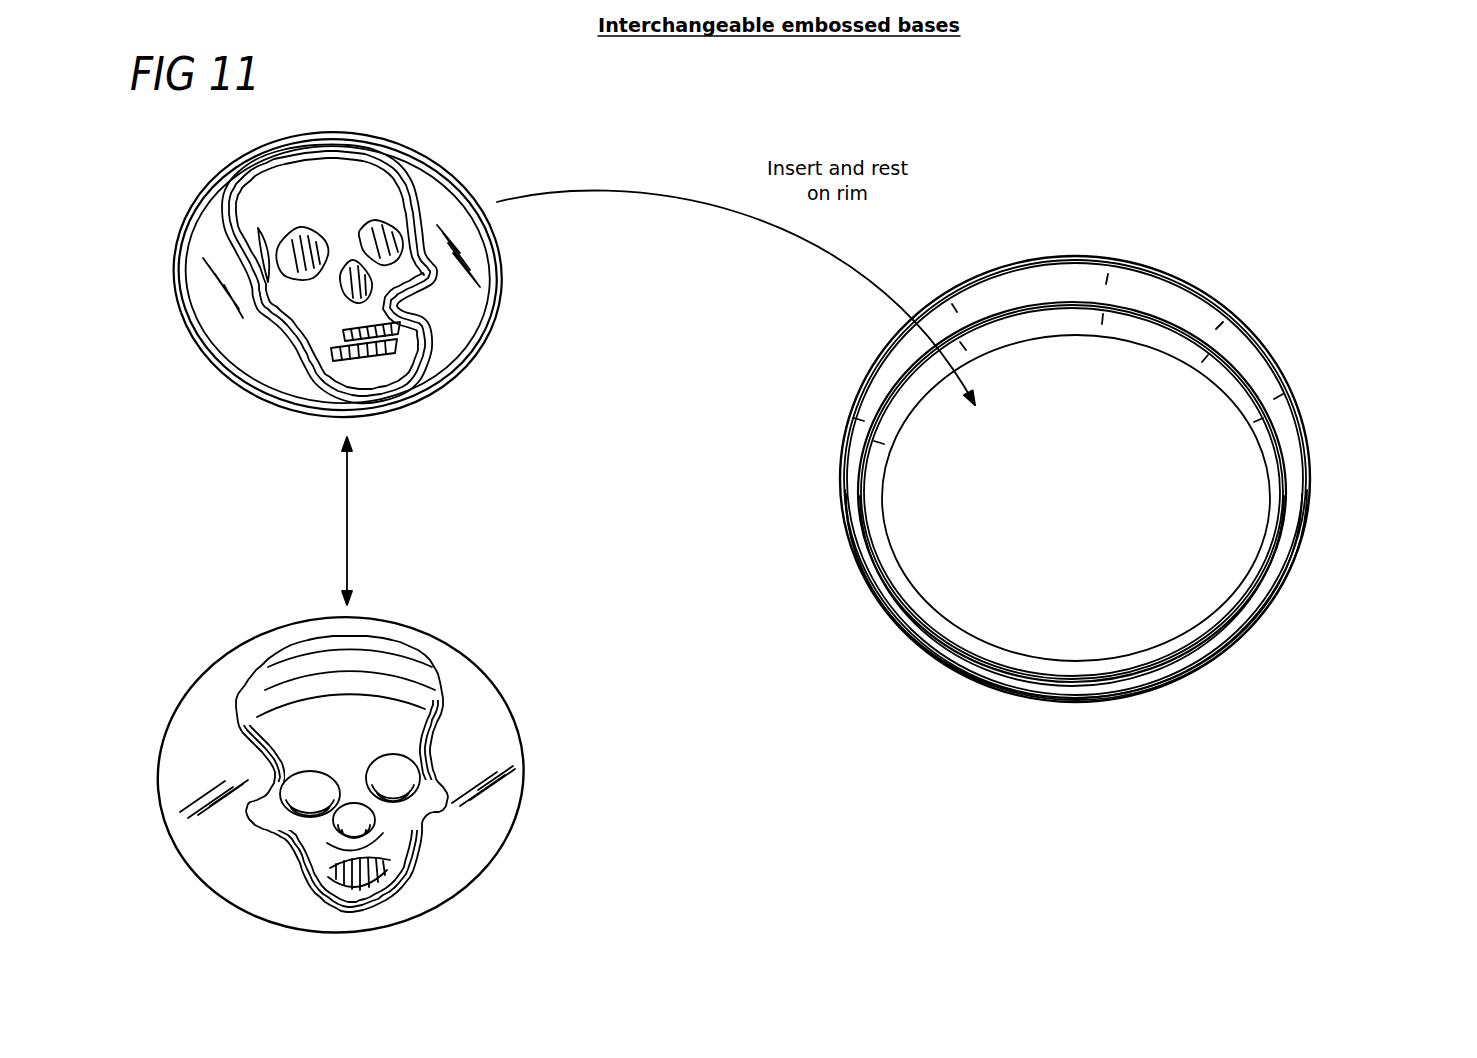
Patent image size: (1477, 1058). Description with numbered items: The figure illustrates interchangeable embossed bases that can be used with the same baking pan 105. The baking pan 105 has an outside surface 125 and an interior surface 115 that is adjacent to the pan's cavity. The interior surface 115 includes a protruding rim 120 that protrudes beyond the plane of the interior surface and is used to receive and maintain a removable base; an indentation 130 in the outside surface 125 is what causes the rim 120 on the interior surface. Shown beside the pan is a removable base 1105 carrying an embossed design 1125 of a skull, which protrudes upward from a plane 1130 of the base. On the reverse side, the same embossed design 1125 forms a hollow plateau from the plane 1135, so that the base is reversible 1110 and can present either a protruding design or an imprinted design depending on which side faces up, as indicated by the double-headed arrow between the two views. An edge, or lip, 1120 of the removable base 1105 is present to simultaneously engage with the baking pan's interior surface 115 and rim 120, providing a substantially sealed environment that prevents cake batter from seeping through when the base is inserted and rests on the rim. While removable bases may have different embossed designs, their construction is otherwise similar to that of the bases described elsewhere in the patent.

The baking pan 105 is at (1260, 268).
The interior surface 115 is at (907, 342).
The protruding rim 120 is at (1013, 307).
The outside surface 125 is at (982, 675).
The indentation 130 is at (1195, 663).
The removable base 1105 is at (498, 318).
The reversible base 1110 is at (402, 521).
The edge or lip 1120 is at (432, 397).
The embossed design 1125 is at (518, 607).
The plane 1130 is at (208, 223).
The plane 1135 is at (227, 700).